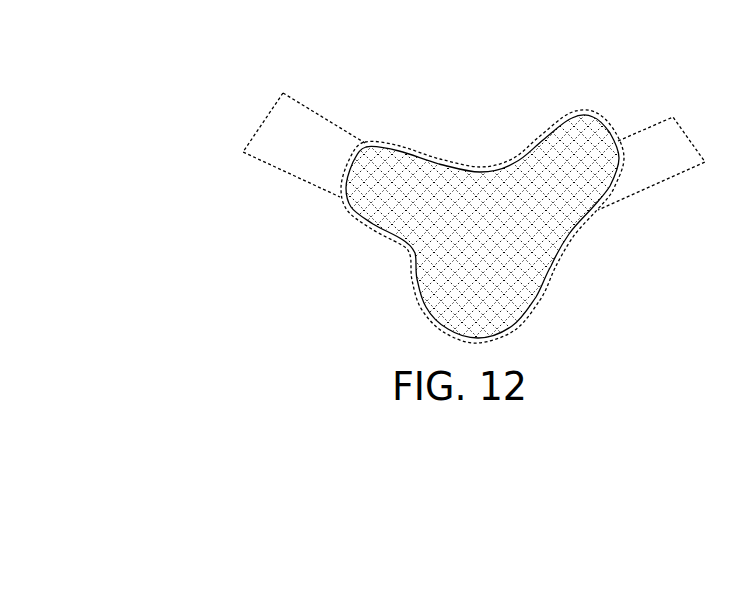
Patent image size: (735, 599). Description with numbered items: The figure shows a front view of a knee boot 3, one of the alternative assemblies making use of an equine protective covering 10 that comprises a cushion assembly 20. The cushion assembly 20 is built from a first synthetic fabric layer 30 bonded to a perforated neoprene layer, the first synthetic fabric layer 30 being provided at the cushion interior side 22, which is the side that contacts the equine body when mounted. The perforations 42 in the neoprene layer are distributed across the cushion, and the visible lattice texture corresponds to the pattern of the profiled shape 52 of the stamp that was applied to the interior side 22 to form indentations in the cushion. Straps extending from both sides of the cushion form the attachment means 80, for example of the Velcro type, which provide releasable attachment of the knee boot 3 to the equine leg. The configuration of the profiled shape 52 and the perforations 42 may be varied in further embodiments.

The equine protective covering 10 is at (474, 195).
The knee boot 3 is at (573, 285).
The cushion assembly 20 is at (455, 172).
The cushion interior side 22 is at (413, 170).
The first synthetic fabric layer 30 is at (510, 177).
The perforations 42 is at (537, 170).
The profiled shape 52 is at (408, 242).
The attachment means 80 is at (655, 175).